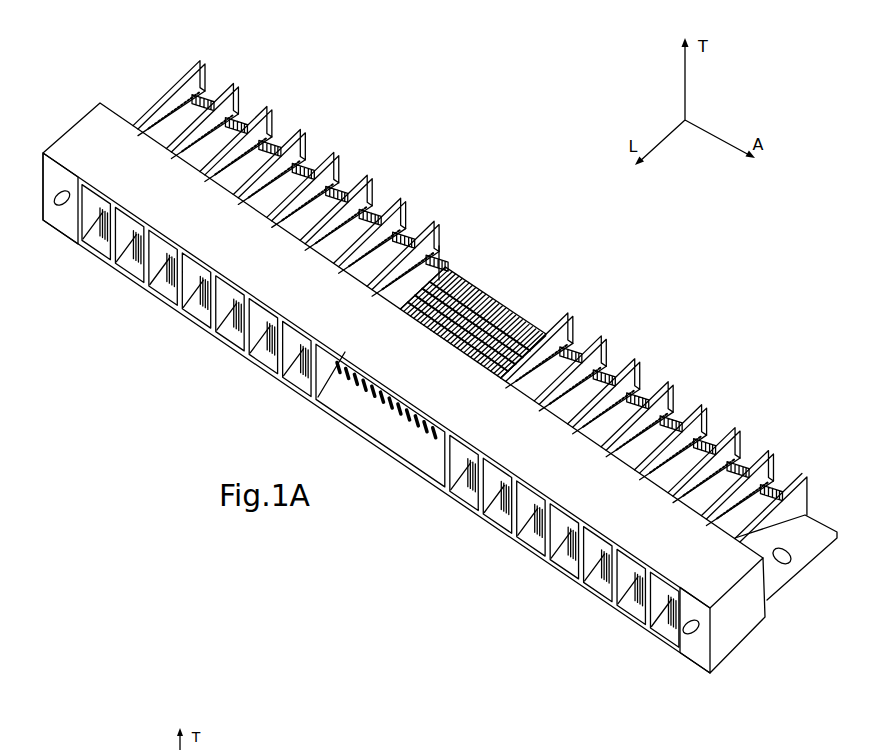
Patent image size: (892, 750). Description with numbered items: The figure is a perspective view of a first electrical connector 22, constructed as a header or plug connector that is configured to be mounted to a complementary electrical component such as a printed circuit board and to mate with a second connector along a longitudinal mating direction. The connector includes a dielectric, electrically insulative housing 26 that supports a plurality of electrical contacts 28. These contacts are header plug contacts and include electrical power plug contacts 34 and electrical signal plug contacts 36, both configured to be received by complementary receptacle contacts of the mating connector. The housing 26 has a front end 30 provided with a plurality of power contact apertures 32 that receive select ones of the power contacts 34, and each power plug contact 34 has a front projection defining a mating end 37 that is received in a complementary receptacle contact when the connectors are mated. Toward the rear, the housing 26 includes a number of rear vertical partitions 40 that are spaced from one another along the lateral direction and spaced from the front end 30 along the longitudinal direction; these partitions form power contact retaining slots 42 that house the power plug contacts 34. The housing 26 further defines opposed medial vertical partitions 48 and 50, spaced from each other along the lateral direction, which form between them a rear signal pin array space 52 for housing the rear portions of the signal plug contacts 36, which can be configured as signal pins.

The first electrical connector 22 is at (133, 48).
The housing 26 is at (740, 633).
The electrical contact 28 is at (246, 106).
The front end 30 is at (65, 228).
The power contact aperture 32 is at (98, 240).
The electrical power plug contact 34 is at (280, 135).
The electrical signal plug contact 36 is at (455, 285).
The mating end 37 is at (132, 270).
The rear vertical partition 40 is at (270, 104).
The power contact retaining slot 42 is at (218, 83).
The medial vertical partition 48 is at (440, 222).
The medial vertical partition 50 is at (569, 311).
The rear signal pin array space 52 is at (500, 295).